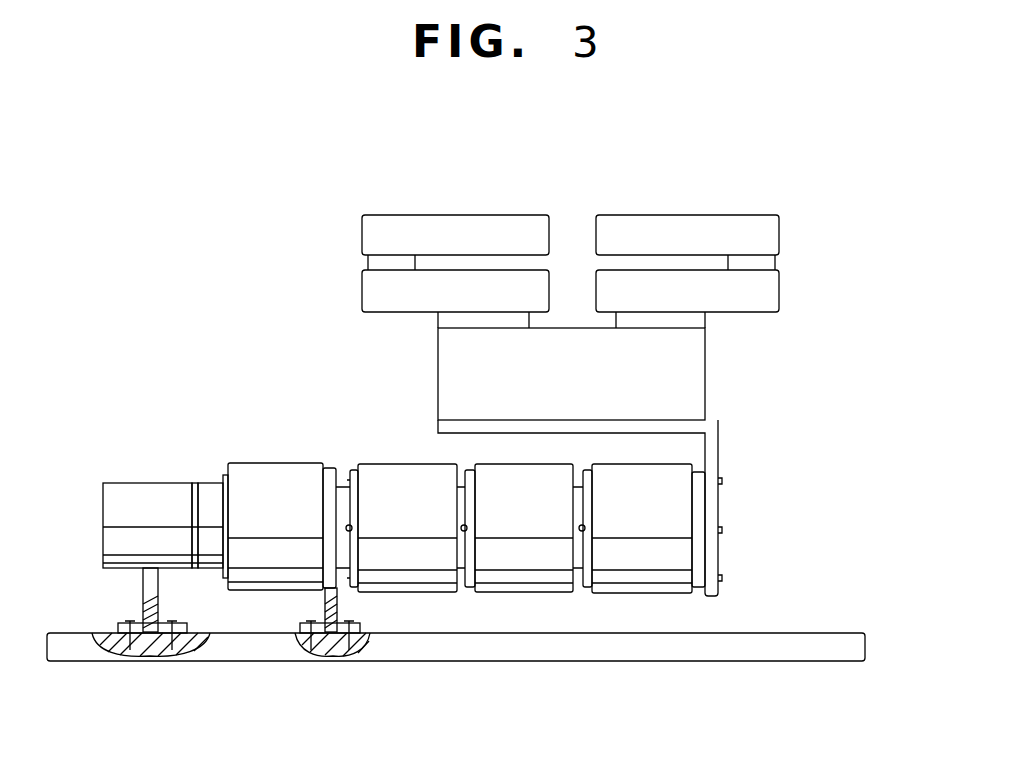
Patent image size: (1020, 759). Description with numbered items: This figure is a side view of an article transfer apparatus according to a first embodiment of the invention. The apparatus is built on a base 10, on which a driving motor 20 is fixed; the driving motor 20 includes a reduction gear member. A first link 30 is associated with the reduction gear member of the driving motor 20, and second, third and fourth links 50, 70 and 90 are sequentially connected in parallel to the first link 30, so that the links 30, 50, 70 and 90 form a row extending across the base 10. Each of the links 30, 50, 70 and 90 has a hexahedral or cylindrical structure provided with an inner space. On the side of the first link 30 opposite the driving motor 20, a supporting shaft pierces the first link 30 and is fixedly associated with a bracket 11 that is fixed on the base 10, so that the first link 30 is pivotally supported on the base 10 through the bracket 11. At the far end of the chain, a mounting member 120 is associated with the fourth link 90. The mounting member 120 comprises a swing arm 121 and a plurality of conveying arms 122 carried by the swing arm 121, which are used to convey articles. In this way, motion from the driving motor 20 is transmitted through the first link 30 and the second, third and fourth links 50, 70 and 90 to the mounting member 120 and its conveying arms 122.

The base 10 is at (740, 661).
The bracket 11 is at (340, 598).
The driving motor 20 is at (103, 513).
The first link 30 is at (273, 462).
The second link 50 is at (386, 462).
The third link 70 is at (528, 592).
The fourth link 90 is at (645, 593).
The mounting member 120 is at (642, 405).
The swing arm 121 is at (690, 382).
The conveying arms 122 is at (779, 237).